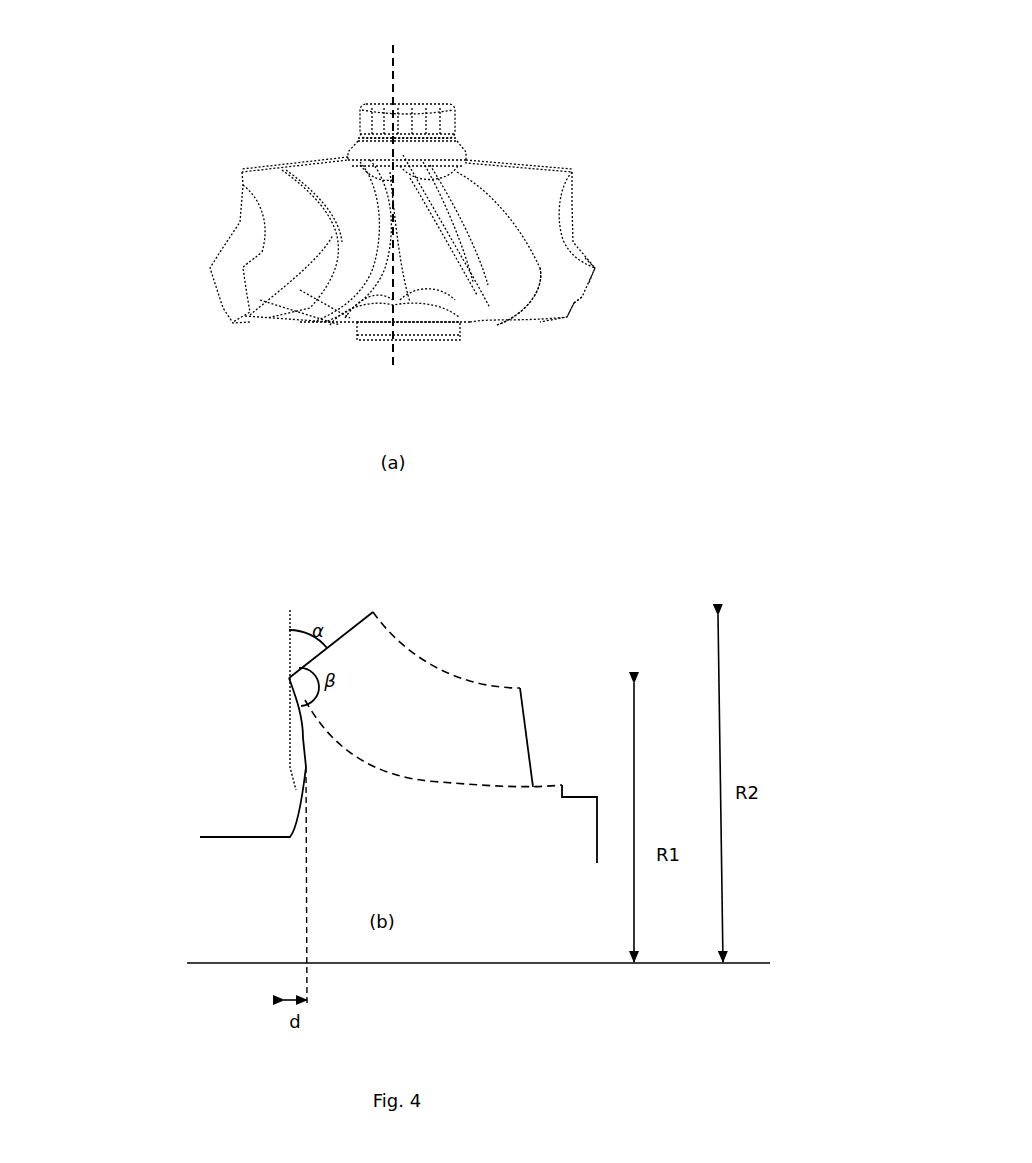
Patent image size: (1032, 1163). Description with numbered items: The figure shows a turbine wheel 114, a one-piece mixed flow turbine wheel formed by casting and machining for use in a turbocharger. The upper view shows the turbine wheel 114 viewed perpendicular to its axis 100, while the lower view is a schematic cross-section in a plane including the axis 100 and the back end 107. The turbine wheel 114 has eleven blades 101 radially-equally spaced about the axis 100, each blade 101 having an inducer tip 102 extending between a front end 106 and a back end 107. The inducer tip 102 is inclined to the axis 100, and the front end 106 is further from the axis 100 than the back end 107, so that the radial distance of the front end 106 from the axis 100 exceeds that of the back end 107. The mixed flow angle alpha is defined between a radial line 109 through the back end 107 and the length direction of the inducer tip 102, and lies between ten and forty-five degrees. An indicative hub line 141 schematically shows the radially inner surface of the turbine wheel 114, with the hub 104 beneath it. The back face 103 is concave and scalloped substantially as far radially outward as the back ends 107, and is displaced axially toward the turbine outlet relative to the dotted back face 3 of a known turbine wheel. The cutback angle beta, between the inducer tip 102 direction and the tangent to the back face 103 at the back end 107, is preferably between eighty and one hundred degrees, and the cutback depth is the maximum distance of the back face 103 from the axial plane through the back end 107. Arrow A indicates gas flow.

The axis 100 is at (393, 57).
The turbine wheel 114 is at (619, 87).
The blades 101 is at (550, 283).
The inducer tip 102 is at (573, 303).
The back face 103 is at (303, 738).
The hub 104 is at (367, 318).
The front end 106 is at (595, 268).
The back end 107 is at (562, 318).
The radial line 109 is at (287, 630).
The hub line 141 is at (408, 778).
The back face of known turbine wheel 3 is at (295, 790).